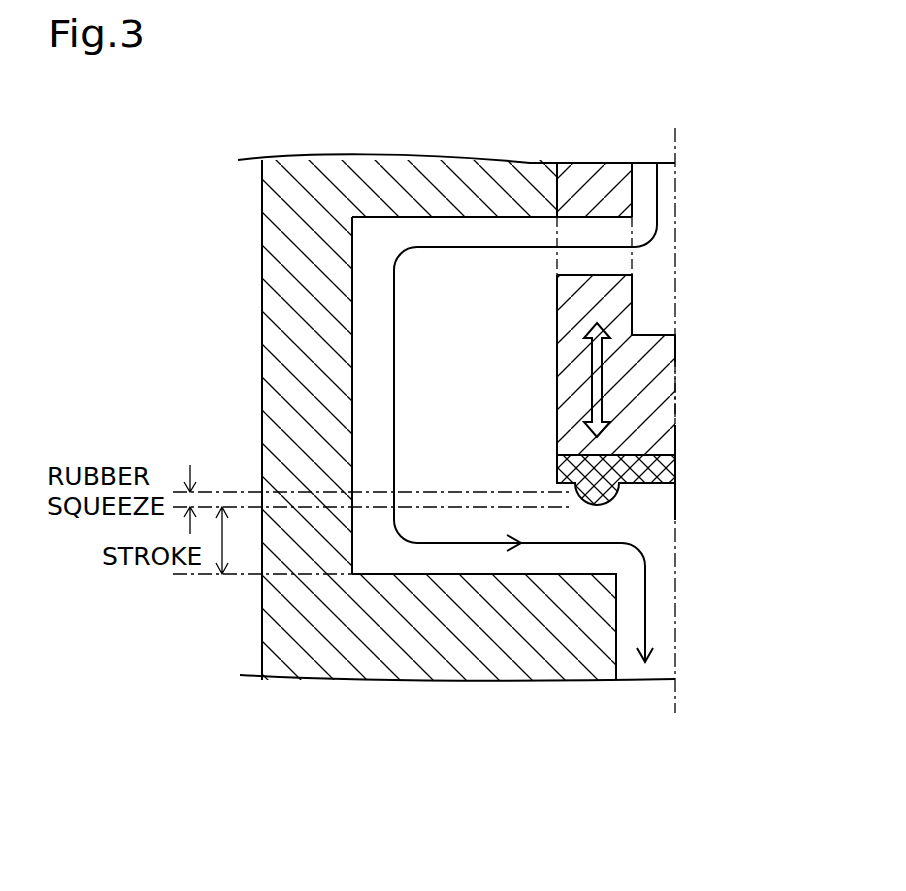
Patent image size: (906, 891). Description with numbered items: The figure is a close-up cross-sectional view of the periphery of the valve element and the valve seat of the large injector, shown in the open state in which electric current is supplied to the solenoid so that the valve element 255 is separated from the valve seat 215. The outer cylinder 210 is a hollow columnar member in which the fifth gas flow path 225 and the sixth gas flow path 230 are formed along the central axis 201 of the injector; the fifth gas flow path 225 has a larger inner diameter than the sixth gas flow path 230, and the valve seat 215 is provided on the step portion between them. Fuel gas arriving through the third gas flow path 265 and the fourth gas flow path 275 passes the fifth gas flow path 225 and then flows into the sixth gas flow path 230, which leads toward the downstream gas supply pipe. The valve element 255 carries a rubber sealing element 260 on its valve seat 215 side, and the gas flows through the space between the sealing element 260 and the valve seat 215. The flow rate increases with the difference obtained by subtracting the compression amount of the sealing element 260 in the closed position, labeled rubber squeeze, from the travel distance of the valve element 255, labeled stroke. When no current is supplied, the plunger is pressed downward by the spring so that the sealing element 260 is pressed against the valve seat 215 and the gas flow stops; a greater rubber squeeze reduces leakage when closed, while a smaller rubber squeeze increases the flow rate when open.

The central axis 201 is at (675, 143).
The outer cylinder 210 is at (276, 273).
The valve seat 215 is at (531, 576).
The fifth gas flow path 225 is at (364, 360).
The sixth gas flow path 230 is at (660, 633).
The valve element 255 is at (640, 392).
The sealing element 260 is at (605, 492).
The third gas flow path 265 is at (660, 187).
The fourth gas flow path 275 is at (600, 258).